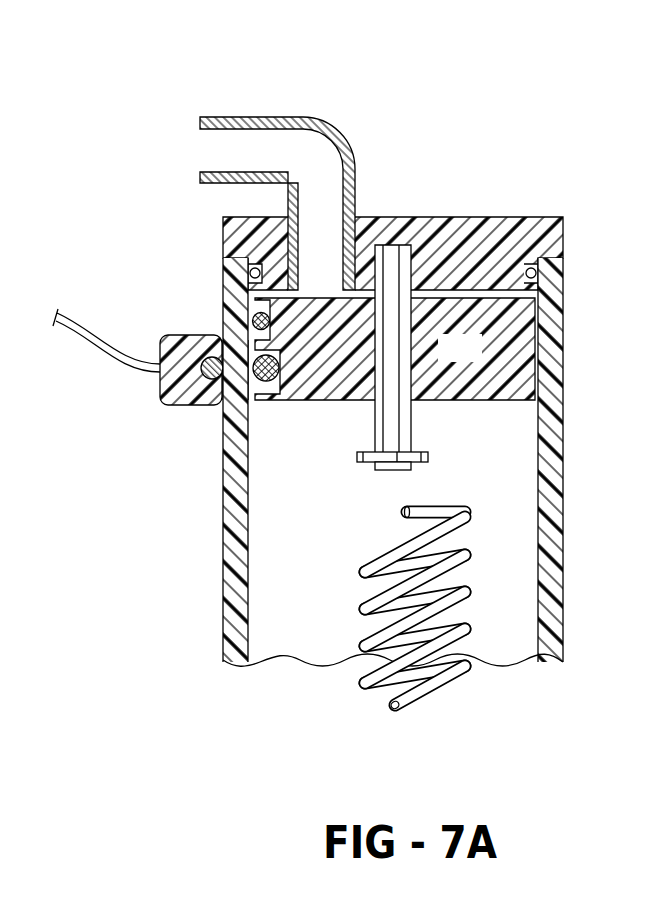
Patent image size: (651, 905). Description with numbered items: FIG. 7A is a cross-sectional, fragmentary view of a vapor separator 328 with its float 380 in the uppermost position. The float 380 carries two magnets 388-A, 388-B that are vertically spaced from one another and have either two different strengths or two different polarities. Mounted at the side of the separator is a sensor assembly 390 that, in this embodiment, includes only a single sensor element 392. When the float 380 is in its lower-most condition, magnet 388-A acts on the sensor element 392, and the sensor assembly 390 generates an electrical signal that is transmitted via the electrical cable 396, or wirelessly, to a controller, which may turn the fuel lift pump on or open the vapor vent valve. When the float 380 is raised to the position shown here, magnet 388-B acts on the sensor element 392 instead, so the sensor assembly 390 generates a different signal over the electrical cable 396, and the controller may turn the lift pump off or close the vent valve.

The vapor separator 328 is at (162, 106).
The float 380 is at (478, 361).
The magnet 388-A is at (256, 321).
The magnet 388-B is at (262, 395).
The sensor assembly 390 is at (138, 401).
The sensor element 392 is at (176, 338).
The electrical cable 396 is at (113, 356).